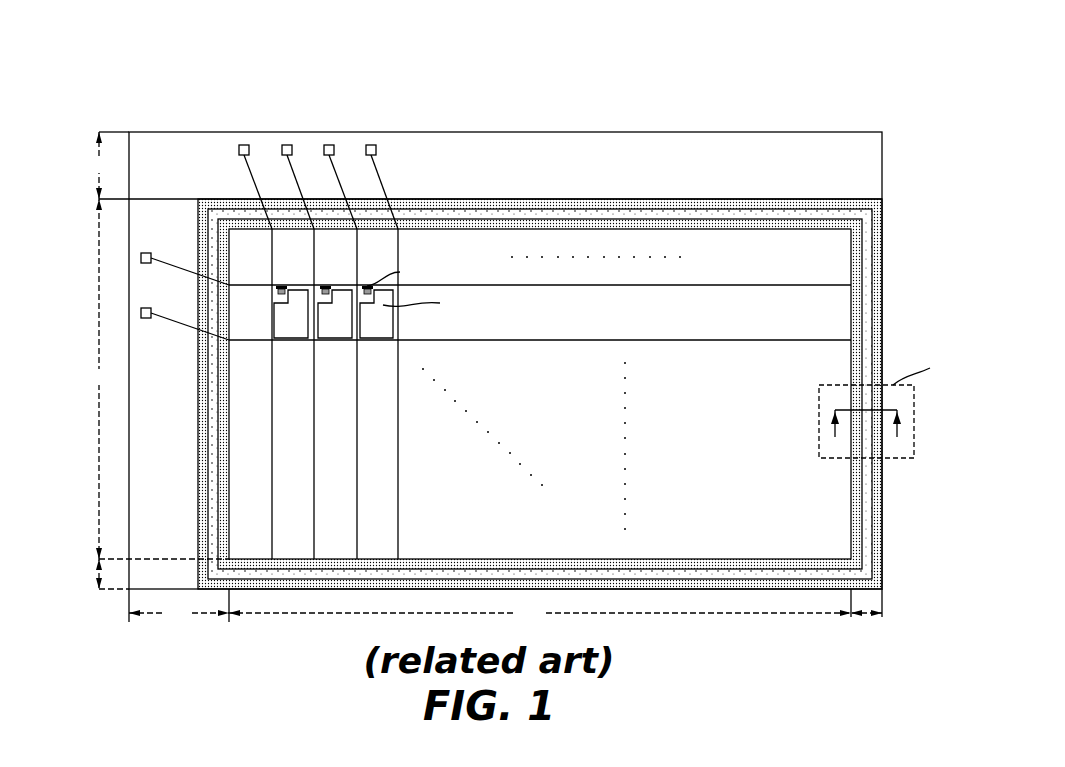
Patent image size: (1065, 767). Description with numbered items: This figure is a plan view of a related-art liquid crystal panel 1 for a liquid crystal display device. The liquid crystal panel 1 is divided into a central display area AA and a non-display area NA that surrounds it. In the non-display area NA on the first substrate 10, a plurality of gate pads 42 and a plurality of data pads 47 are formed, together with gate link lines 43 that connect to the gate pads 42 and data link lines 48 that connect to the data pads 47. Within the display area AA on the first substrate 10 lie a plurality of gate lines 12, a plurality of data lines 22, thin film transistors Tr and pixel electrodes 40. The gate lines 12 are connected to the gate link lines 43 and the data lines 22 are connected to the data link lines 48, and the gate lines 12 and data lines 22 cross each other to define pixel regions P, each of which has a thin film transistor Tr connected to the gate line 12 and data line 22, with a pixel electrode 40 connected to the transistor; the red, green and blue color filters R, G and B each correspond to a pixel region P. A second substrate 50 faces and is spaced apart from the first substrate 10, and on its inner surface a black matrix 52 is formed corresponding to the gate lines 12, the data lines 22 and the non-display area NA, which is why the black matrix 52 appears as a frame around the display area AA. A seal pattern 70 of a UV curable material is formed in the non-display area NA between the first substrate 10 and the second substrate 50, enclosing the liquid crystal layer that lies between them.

The liquid crystal panel 1 is at (492, 337).
The first substrate 10 is at (690, 131).
The gate line 12 is at (757, 341).
The data line 22 is at (399, 420).
The pixel electrode 40 is at (405, 326).
The gate pad 42 is at (141, 258).
The gate link line 43 is at (177, 322).
The data pad 47 is at (329, 144).
The data link line 48 is at (374, 165).
The second substrate 50 is at (575, 336).
The black matrix 52 is at (552, 200).
The seal pattern 70 is at (468, 210).